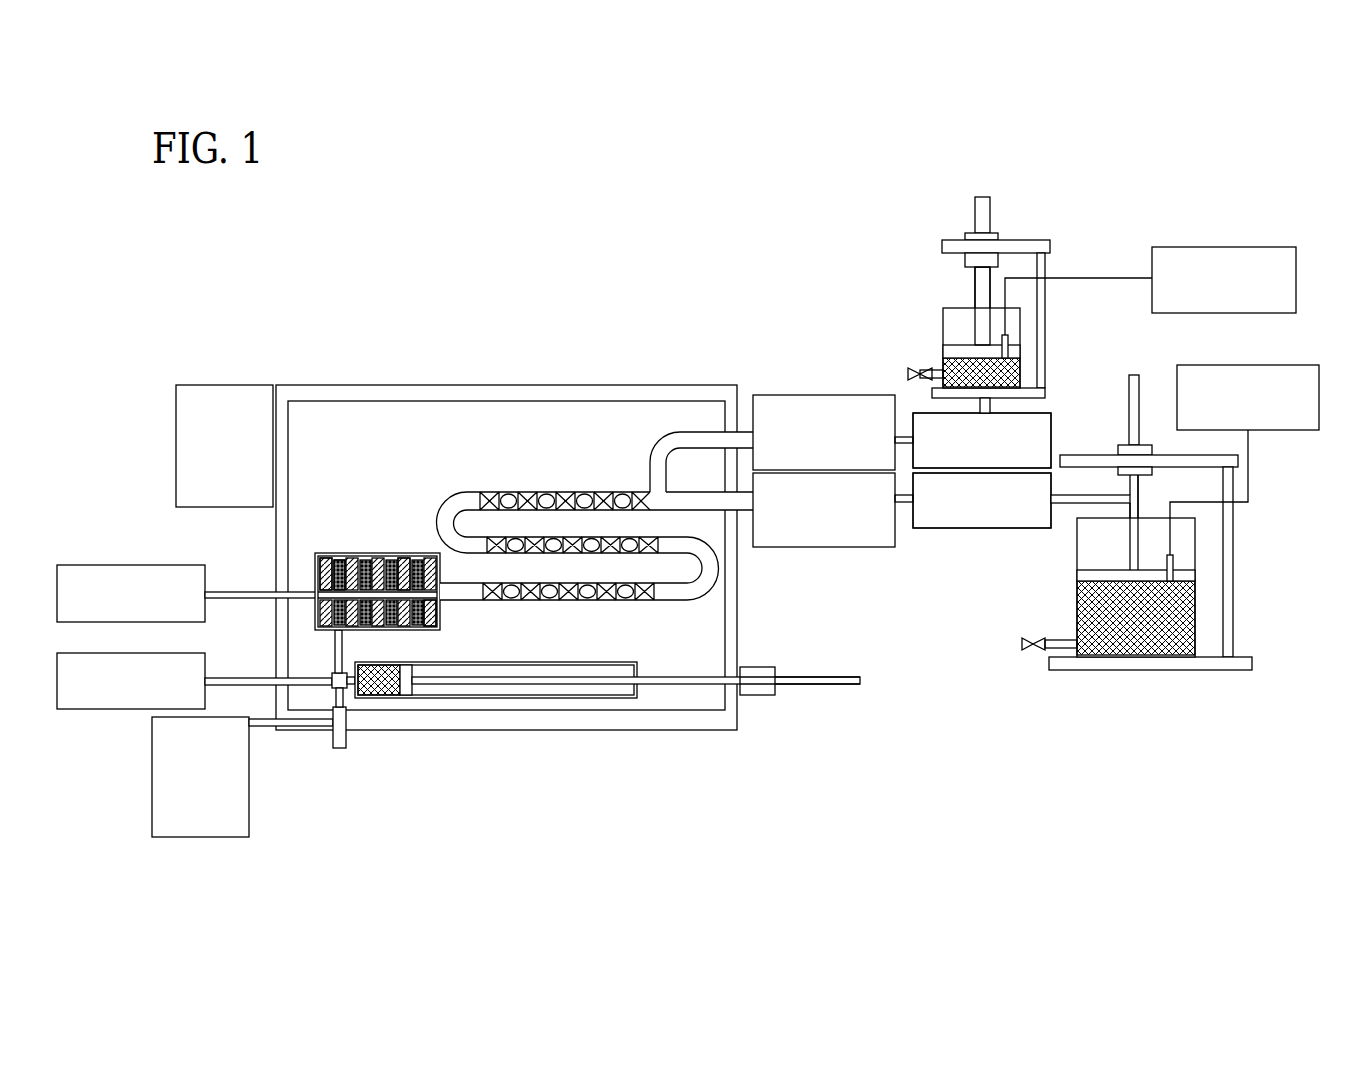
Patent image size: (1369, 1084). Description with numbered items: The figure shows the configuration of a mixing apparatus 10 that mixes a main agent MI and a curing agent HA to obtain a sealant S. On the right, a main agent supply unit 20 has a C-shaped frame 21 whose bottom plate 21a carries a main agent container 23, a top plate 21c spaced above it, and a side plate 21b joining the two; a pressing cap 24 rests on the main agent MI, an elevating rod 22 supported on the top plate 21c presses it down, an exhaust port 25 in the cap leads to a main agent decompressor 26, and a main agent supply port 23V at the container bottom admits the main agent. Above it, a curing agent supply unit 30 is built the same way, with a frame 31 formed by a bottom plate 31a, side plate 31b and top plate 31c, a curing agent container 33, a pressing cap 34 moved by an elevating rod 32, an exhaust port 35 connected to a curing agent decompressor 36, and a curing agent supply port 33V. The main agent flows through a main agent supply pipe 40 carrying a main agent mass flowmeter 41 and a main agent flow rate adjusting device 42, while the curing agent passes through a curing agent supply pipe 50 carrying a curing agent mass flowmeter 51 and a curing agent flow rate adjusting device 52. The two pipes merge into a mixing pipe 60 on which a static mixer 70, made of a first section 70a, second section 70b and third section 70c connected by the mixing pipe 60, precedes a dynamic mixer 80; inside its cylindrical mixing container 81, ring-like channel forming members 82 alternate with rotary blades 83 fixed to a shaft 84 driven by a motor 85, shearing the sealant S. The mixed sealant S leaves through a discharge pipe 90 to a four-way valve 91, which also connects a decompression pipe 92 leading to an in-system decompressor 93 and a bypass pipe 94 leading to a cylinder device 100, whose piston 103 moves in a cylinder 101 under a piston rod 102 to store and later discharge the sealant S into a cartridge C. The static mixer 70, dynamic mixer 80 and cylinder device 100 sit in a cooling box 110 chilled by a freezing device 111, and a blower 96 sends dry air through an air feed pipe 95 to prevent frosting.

The mixing apparatus 10 is at (596, 285).
The cooling box 110 is at (322, 386).
The freezing device 111 is at (176, 400).
The motor 85 is at (133, 565).
The shaft 84 is at (222, 592).
The dynamic mixer 80 is at (378, 555).
The cylindrical mixing container 81 is at (357, 555).
The channel forming member 82 is at (407, 555).
The rotary blade 83 is at (337, 555).
The mixing pipe 60 is at (450, 493).
The static mixer 70 is at (554, 449).
The first section 70a is at (505, 492).
The second section 70b is at (565, 537).
The third section 70c is at (610, 583).
The discharge pipe 90 is at (333, 655).
The four-way valve 91 is at (347, 648).
The decompression pipe 92 is at (223, 678).
The in-system decompressor 93 is at (148, 709).
The bypass pipe 94 is at (348, 703).
The air feed pipe 95 is at (263, 726).
The blower 96 is at (225, 837).
The cartridge C is at (333, 735).
The sealant S is at (383, 695).
The cylinder device 100 is at (640, 695).
The cylinder 101 is at (517, 700).
The piston rod 102 is at (805, 677).
The piston 103 is at (415, 688).
The curing agent flow rate adjusting device 52 is at (775, 395).
The main agent flow rate adjusting device 42 is at (850, 547).
The curing agent supply pipe 50 is at (913, 415).
The curing agent mass flowmeter 51 is at (1052, 446).
The main agent supply pipe 40 is at (905, 505).
The main agent mass flowmeter 41 is at (970, 528).
The curing agent supply unit 30 is at (987, 278).
The frame 31 is at (1018, 297).
The bottom plate 31a is at (1033, 403).
The side plate 31b is at (1045, 270).
The top plate 31c is at (955, 240).
The elevating rod 32 is at (990, 200).
The curing agent container 33 is at (950, 315).
The pressing cap 34 is at (950, 352).
The exhaust port 35 is at (1010, 340).
The curing agent decompressor 36 is at (1222, 247).
The curing agent supply port 33V is at (908, 374).
The curing agent HA is at (943, 365).
The main agent supply unit 20 is at (1129, 521).
The frame 21 is at (1184, 565).
The bottom plate 21a is at (1150, 670).
The side plate 21b is at (1233, 575).
The top plate 21c is at (1215, 455).
The elevating rod 22 is at (1139, 375).
The main agent container 23 is at (1077, 600).
The main agent supply port 23V is at (1022, 644).
The pressing cap 24 is at (1093, 572).
The exhaust port 25 is at (1175, 560).
The main agent decompressor 26 is at (1252, 365).
The main agent MI is at (1077, 630).